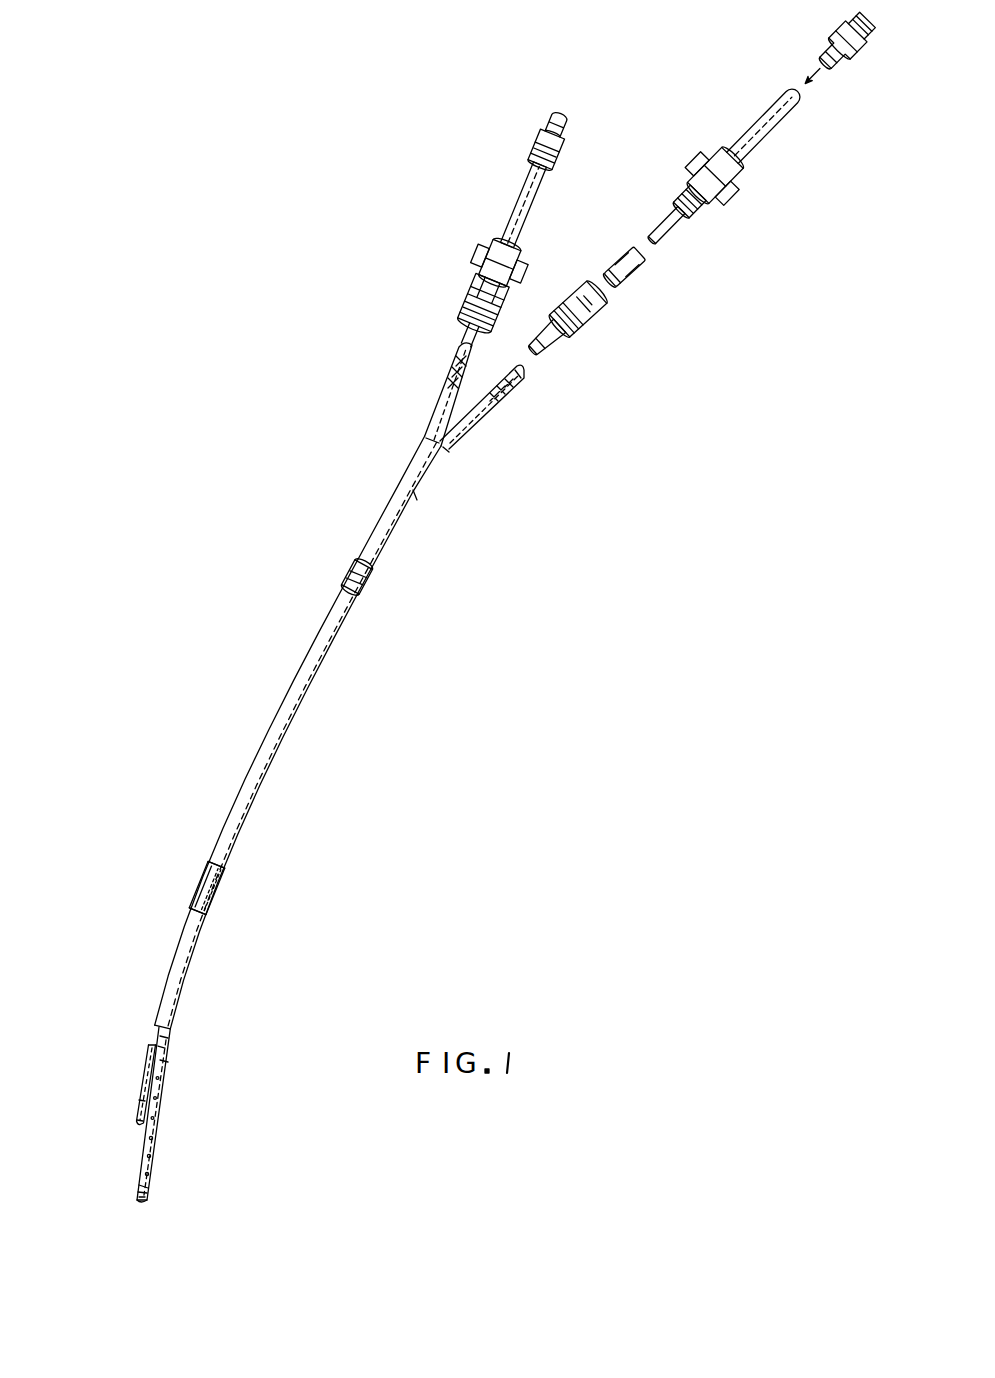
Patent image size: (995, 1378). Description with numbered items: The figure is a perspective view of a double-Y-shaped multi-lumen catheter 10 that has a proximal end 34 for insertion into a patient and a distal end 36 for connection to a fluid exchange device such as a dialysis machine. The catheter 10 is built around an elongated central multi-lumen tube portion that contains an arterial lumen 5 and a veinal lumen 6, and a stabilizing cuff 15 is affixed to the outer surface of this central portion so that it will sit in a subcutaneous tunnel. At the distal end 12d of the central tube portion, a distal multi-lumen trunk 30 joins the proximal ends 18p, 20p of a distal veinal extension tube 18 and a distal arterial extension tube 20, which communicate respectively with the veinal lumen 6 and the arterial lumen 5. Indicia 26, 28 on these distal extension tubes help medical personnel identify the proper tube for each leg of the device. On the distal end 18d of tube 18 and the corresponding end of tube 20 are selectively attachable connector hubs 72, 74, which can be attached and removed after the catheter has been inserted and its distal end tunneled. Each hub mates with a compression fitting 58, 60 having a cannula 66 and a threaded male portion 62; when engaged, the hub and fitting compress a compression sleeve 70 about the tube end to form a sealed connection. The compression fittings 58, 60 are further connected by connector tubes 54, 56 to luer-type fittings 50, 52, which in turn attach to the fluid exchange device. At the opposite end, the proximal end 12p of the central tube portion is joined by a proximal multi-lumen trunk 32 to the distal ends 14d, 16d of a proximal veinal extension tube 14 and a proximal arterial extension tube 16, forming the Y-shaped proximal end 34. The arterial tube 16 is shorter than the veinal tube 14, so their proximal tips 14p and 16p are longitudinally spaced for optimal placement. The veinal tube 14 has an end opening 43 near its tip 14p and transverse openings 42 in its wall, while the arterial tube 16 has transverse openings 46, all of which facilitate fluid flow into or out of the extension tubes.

The arterial lumen 5 is at (200, 878).
The veinal lumen 6 is at (215, 885).
The multi-lumen catheter 10 is at (219, 589).
The distal end of central tube portion 12d is at (415, 497).
The proximal end of central tube portion 12p is at (160, 1022).
The proximal veinal extension tube 14 is at (155, 1107).
The distal end of proximal veinal extension tube 14d is at (163, 1062).
The proximal tip of proximal veinal extension tube 14p is at (157, 1190).
The stabilizing cuff 15 is at (372, 577).
The proximal arterial extension tube 16 is at (143, 1086).
The distal end of proximal arterial extension tube 16d is at (150, 1060).
The proximal tip of proximal arterial extension tube 16p is at (133, 1124).
The distal veinal extension tube 18 is at (473, 417).
The distal end of distal veinal extension tube 18d is at (523, 379).
The proximal end of distal veinal extension tube 18p is at (443, 455).
The distal arterial extension tube 20 is at (442, 402).
The proximal end of distal arterial extension tube 20p is at (430, 439).
The indicia 26 is at (450, 377).
The indicia 28 is at (510, 388).
The distal multi-lumen trunk 30 is at (418, 468).
The proximal multi-lumen trunk 32 is at (167, 1040).
The proximal end 34 is at (108, 1213).
The distal end 36 is at (652, 102).
The transverse openings 42 is at (150, 1158).
The end opening 43 is at (142, 1203).
The transverse openings 46 is at (140, 1102).
The luer-type fitting 50 is at (826, 37).
The luer-type fitting 52 is at (540, 143).
The connector tube 54 is at (770, 136).
The connector tube 56 is at (525, 195).
The compression fitting 58 is at (725, 173).
The compression fitting 60 is at (480, 258).
The threaded male portion 62 is at (700, 206).
The cannula 66 is at (670, 233).
The compression sleeve 70 is at (632, 273).
The veinal connector hub 72 is at (595, 315).
The arterial connector hub 74 is at (470, 283).